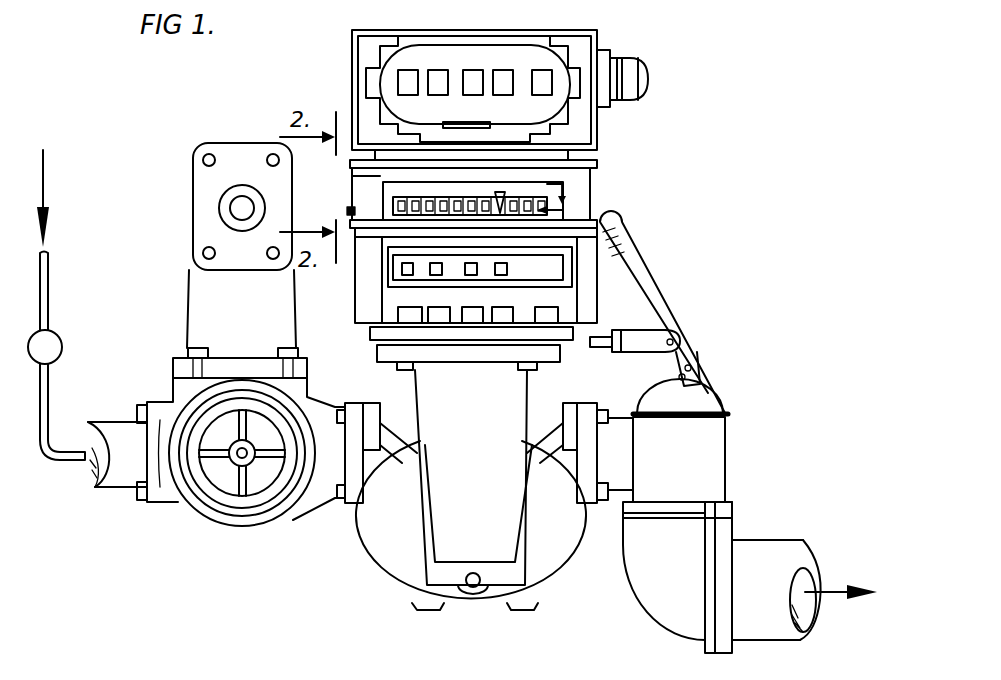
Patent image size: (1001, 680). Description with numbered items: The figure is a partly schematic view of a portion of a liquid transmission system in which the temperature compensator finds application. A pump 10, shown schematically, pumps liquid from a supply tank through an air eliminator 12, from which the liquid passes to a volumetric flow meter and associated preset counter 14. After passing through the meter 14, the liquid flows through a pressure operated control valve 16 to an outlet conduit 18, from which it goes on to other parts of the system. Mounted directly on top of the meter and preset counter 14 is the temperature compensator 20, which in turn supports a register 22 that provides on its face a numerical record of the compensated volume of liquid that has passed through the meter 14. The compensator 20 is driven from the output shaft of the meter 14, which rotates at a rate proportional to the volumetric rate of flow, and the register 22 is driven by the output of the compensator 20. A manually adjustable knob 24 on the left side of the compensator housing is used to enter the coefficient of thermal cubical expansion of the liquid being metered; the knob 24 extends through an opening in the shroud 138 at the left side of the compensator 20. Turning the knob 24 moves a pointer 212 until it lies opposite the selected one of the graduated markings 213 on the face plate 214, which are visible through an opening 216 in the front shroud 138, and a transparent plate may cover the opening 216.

The pump 10 is at (62, 340).
The air eliminator 12 is at (189, 236).
The volumetric flow meter and associated preset counter 14 is at (407, 395).
The pressure operated control valve 16 is at (735, 453).
The outlet conduit 18 is at (775, 533).
The temperature compensator 20 is at (594, 181).
The register 22 is at (604, 36).
The manually adjustable knob 24 is at (347, 211).
The shroud 138 is at (366, 180).
The pointer 212 is at (499, 214).
The graduated markings 213 is at (402, 209).
The face plate 214 is at (594, 213).
The opening 216 is at (588, 193).